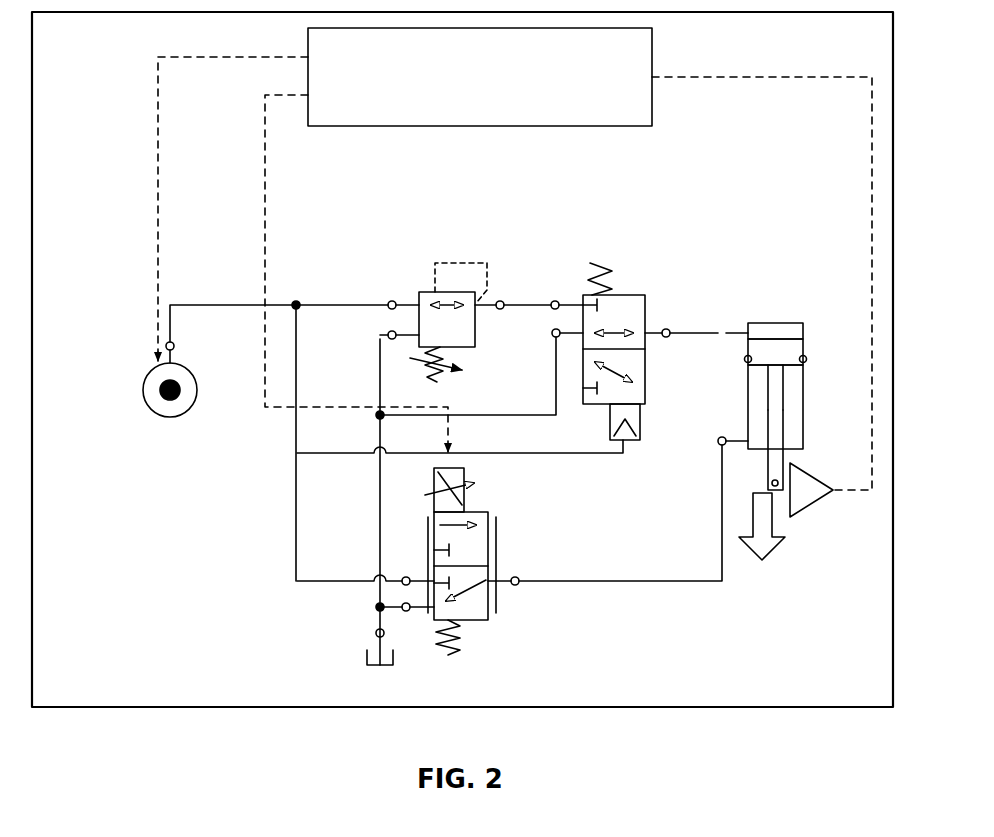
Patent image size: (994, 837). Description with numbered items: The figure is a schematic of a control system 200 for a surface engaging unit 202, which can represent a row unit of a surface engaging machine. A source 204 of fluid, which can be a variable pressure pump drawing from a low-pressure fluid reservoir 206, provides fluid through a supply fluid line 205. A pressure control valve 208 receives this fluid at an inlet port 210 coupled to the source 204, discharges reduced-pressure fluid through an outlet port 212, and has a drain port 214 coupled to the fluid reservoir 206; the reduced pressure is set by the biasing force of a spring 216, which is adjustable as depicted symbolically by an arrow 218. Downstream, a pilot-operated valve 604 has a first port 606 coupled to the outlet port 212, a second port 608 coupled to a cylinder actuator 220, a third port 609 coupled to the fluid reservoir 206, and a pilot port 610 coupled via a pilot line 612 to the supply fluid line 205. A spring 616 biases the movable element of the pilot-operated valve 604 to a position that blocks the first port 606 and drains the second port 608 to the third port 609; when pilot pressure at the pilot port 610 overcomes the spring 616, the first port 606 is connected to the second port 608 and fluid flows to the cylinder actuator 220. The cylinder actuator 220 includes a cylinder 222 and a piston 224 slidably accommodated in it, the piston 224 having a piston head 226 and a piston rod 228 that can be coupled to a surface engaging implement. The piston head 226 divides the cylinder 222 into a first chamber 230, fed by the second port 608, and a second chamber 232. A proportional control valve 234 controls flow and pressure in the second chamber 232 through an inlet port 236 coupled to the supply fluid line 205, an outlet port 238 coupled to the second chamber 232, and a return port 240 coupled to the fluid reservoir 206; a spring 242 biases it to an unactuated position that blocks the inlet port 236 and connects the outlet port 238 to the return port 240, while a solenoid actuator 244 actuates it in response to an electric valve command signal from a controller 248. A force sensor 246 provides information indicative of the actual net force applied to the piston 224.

The control system 200 is at (146, 131).
The surface engaging unit 202 is at (893, 202).
The source of fluid 204 is at (143, 390).
The supply fluid line 205 is at (220, 304).
The fluid reservoir 206 is at (366, 652).
The pressure control valve 208 is at (422, 290).
The inlet port 210 is at (392, 299).
The outlet port 212 is at (501, 300).
The drain port 214 is at (381, 342).
The spring 216 is at (440, 376).
The arrow 218 is at (452, 362).
The cylinder actuator 220 is at (761, 401).
The cylinder 222 is at (748, 384).
The piston 224 is at (766, 420).
The piston head 226 is at (790, 350).
The piston rod 228 is at (778, 459).
The first chamber 230 is at (773, 333).
The second chamber 232 is at (768, 408).
The proportional control valve 234 is at (489, 618).
The inlet port 236 is at (406, 574).
The outlet port 238 is at (515, 574).
The return port 240 is at (407, 614).
The spring 242 is at (460, 648).
The solenoid actuator 244 is at (470, 493).
The force sensor 246 is at (808, 505).
The controller 248 is at (481, 127).
The pilot-operated valve 604 is at (634, 295).
The first port 606 is at (556, 299).
The second port 608 is at (667, 327).
The third port 609 is at (558, 340).
The pilot port 610 is at (630, 446).
The pilot line 612 is at (585, 455).
The spring 616 is at (601, 262).